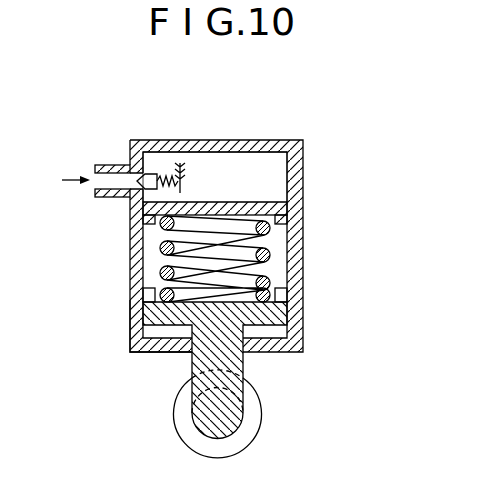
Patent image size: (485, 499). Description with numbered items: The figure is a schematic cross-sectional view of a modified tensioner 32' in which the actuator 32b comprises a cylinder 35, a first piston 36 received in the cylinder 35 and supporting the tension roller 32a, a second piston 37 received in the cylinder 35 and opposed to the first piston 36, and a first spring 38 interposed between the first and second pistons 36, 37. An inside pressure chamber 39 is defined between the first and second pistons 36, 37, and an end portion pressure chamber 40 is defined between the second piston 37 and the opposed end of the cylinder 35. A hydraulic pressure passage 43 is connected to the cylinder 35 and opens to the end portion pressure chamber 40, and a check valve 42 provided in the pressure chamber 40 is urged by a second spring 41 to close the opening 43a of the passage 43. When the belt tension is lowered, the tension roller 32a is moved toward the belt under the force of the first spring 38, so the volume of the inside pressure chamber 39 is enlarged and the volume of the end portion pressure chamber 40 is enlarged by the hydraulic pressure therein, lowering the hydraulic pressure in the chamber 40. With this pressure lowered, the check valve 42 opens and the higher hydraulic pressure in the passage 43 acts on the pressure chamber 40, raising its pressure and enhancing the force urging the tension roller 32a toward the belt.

The tensioner 32' is at (202, 270).
The tension roller 32a is at (262, 418).
The actuator 32b is at (123, 257).
The cylinder 35 is at (131, 327).
The first piston 36 is at (285, 330).
The second piston 37 is at (288, 213).
The first spring 38 is at (271, 257).
The inside pressure chamber 39 is at (150, 261).
The end portion pressure chamber 40 is at (290, 172).
The second spring 41 is at (173, 168).
The check valve 42 is at (148, 173).
The hydraulic pressure passage 43 is at (98, 165).
The opening 43a is at (121, 197).